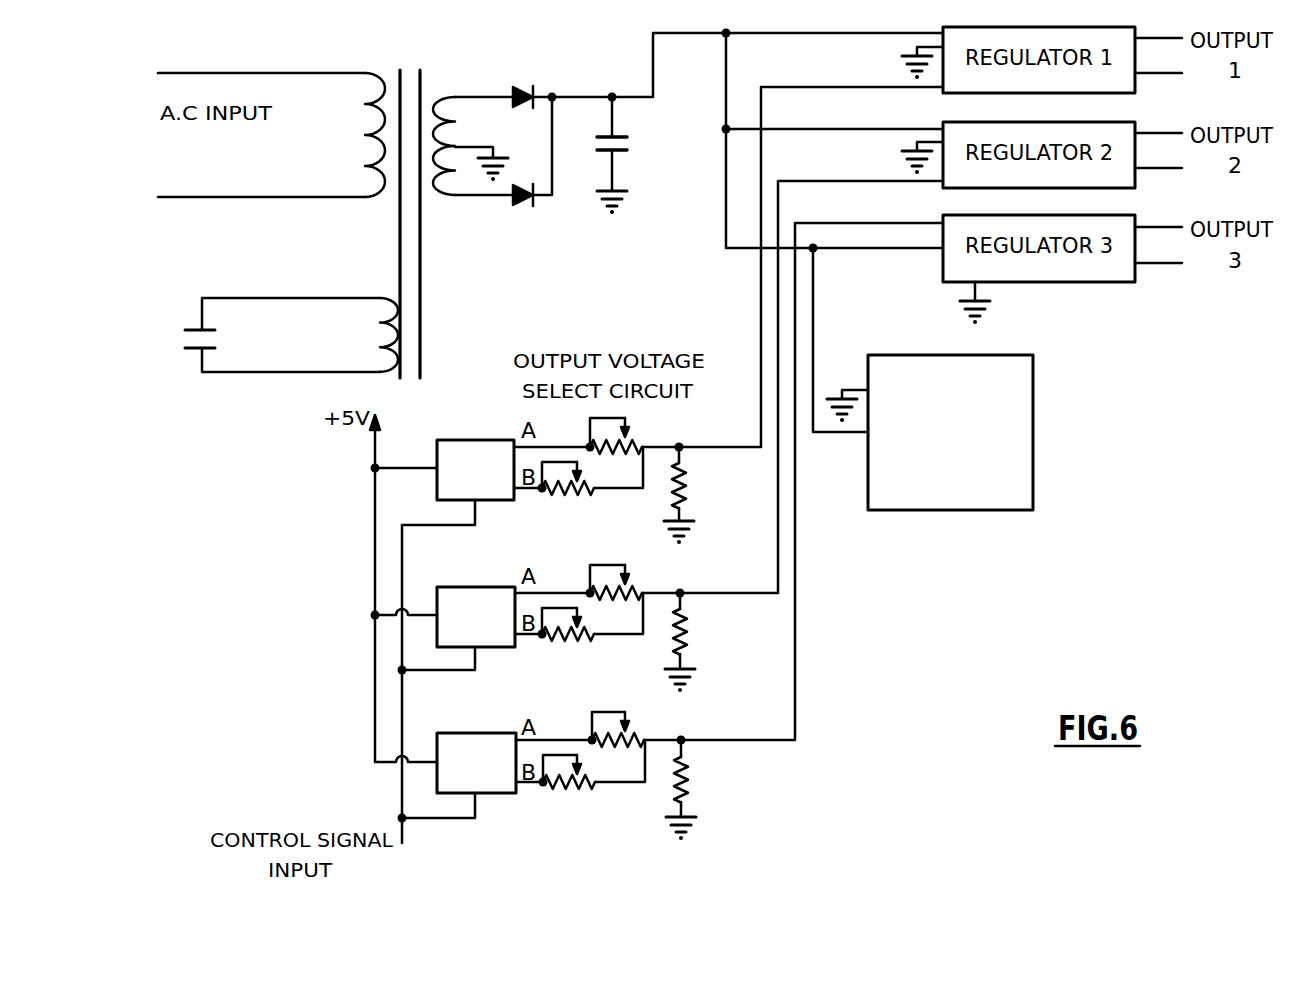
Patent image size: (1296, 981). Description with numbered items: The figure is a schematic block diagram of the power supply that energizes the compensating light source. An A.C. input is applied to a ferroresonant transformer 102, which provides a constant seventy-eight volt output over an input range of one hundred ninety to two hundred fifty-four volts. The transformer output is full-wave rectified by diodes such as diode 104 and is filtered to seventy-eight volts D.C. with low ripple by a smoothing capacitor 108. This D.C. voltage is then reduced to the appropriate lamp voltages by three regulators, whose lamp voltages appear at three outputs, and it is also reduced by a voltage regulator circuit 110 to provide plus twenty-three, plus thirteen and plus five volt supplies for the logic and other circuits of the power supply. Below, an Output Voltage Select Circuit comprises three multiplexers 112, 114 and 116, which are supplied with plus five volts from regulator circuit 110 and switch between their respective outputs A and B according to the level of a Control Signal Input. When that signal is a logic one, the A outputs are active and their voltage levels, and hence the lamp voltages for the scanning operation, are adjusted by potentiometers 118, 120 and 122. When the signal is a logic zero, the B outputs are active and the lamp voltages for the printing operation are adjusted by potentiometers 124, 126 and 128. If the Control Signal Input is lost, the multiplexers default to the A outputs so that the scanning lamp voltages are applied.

The ferroresonant transformer 102 is at (413, 77).
The diode 104 is at (522, 90).
The smoothing capacitor 108 is at (618, 136).
The voltage regulator circuit 110 is at (1033, 392).
The multiplexer 112 is at (482, 440).
The multiplexer 114 is at (480, 587).
The multiplexer 116 is at (480, 733).
The potentiometer 118 is at (630, 418).
The potentiometer 120 is at (625, 565).
The potentiometer 122 is at (625, 712).
The potentiometer 124 is at (579, 462).
The potentiometer 126 is at (579, 608).
The potentiometer 128 is at (579, 755).